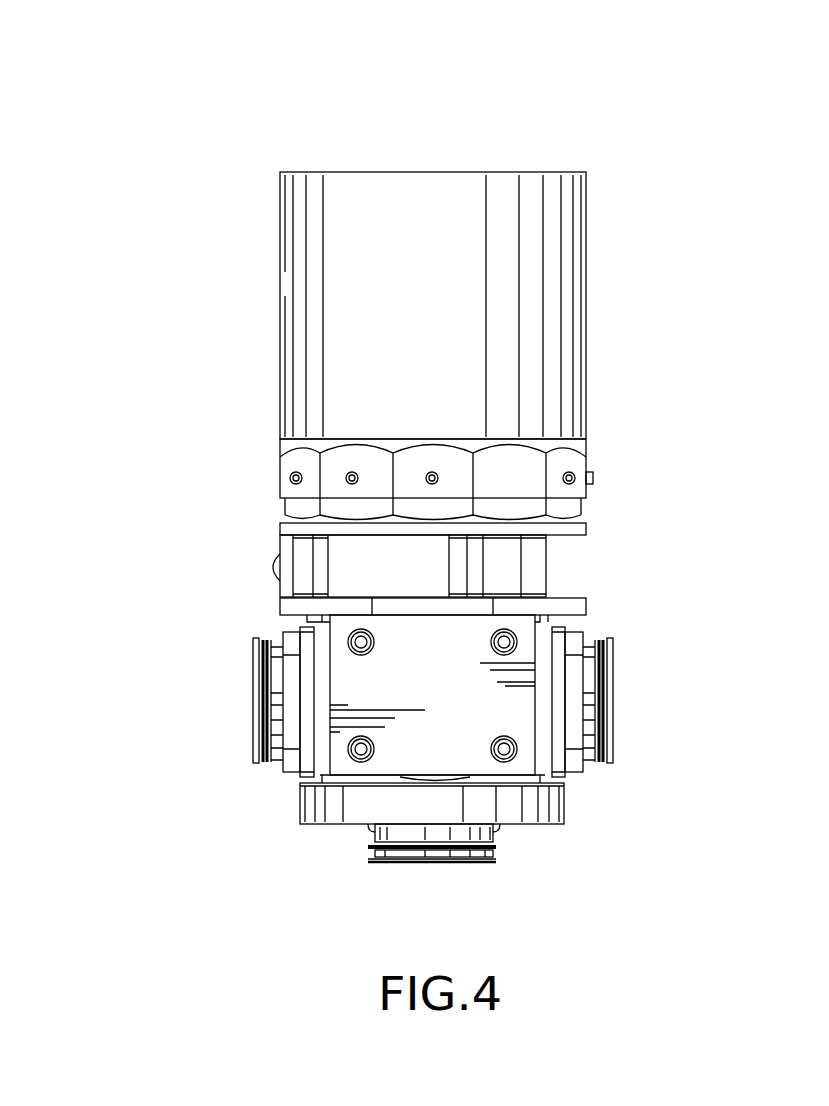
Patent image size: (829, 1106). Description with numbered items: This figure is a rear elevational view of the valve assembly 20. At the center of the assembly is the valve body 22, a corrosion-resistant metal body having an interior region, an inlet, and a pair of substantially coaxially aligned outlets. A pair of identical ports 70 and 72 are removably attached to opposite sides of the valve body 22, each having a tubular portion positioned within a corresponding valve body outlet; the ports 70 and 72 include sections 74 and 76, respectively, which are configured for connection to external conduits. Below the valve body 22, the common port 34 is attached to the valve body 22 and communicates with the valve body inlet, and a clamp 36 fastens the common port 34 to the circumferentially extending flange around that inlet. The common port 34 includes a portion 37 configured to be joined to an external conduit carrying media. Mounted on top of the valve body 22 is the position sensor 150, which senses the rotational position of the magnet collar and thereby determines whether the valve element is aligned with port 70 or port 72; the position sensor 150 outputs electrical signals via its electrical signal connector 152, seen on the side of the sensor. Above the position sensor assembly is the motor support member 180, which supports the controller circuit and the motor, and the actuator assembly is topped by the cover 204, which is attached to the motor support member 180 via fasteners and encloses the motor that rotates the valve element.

The valve assembly 20 is at (128, 93).
The cover 204 is at (588, 278).
The motor support member 180 is at (588, 462).
The position sensor 150 is at (548, 567).
The electrical signal connector 152 is at (272, 567).
The valve body 22 is at (585, 608).
The section 74 is at (262, 640).
The section 76 is at (598, 640).
The port 70 is at (255, 713).
The port 72 is at (612, 733).
The clamp 36 is at (565, 805).
The common port 34 is at (485, 835).
The portion 37 is at (388, 862).